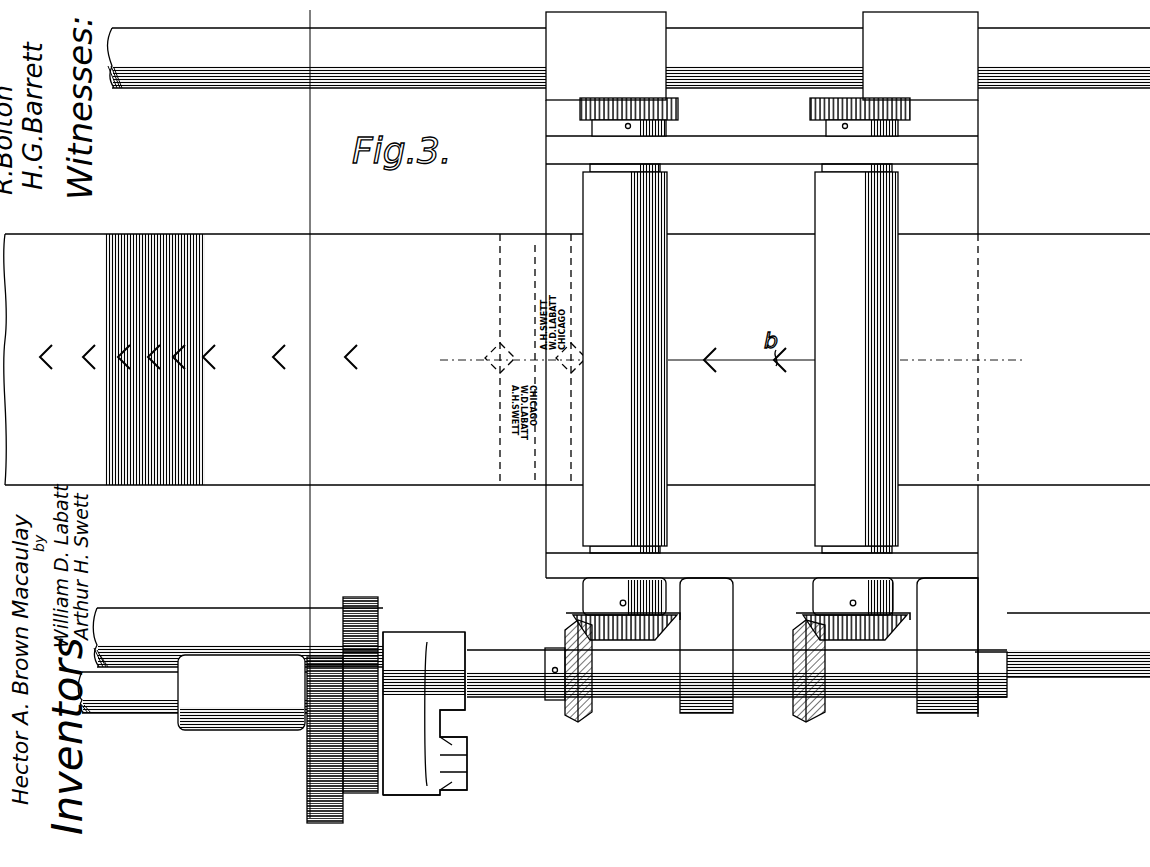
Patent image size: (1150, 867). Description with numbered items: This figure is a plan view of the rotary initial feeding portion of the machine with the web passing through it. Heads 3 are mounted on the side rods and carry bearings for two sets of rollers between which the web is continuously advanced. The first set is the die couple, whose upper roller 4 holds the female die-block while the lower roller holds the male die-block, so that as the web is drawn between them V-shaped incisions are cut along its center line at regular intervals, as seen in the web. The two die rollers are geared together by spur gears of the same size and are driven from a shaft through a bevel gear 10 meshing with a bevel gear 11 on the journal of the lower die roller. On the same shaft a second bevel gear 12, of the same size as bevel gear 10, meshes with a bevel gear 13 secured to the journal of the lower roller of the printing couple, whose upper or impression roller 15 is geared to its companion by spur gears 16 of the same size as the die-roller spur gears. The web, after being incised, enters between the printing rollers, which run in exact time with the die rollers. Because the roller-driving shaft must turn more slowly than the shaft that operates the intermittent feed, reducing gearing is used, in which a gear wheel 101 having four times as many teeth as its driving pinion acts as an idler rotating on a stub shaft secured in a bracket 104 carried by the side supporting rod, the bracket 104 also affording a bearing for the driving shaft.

The heads 3 is at (762, 364).
The upper roller 4 is at (885, 211).
The bevel gear 10 is at (812, 718).
The bevel gear 11 is at (907, 633).
The bevel gear 12 is at (584, 726).
The bevel gear 13 is at (575, 620).
The upper or impression roller 15 is at (651, 322).
The spur gears 16 is at (580, 113).
The gear wheel 101 is at (423, 747).
The bracket 104 is at (254, 718).